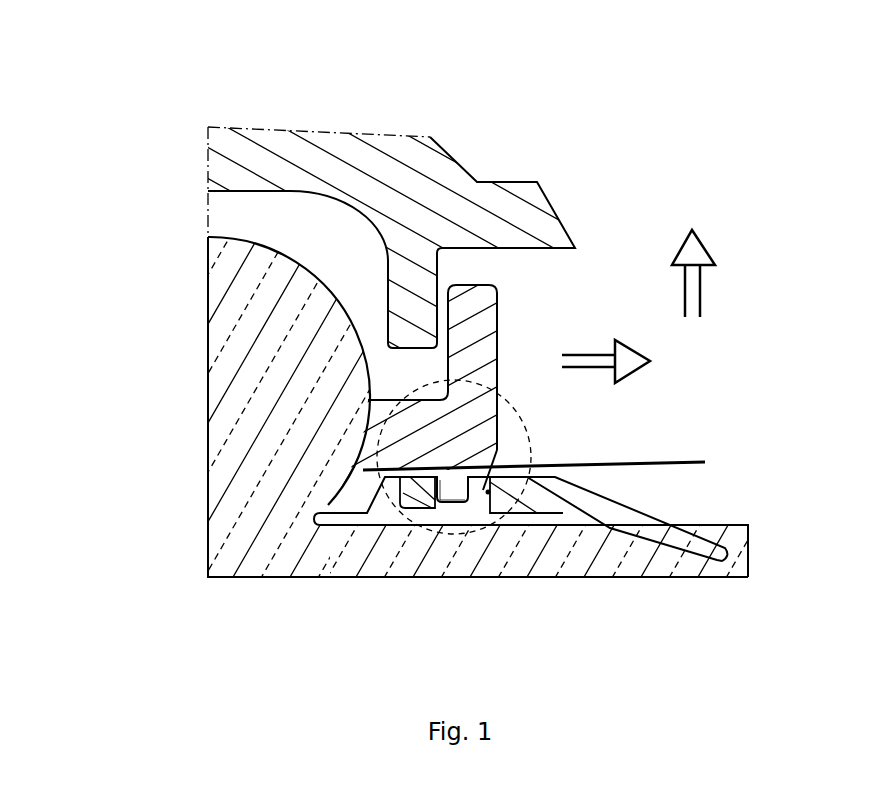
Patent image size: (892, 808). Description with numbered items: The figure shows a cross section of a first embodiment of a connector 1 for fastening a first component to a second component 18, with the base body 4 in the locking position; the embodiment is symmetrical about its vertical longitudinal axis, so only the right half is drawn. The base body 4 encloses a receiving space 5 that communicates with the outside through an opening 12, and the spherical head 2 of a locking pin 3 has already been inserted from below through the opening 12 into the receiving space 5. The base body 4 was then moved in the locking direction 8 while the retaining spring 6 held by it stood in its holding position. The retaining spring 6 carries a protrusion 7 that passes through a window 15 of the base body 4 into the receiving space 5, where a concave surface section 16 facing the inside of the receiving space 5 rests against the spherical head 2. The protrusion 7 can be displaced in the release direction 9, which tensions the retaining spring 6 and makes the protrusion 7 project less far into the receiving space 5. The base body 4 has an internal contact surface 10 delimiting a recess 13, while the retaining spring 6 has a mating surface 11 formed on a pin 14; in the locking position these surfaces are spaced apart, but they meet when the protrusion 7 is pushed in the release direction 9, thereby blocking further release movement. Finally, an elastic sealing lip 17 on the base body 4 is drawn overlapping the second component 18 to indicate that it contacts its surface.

The connector 1 is at (514, 129).
The head 2 is at (227, 312).
The locking pin 3 is at (183, 381).
The base body 4 is at (397, 160).
The receiving space 5 is at (243, 218).
The retaining spring 6 is at (477, 440).
The protrusion 7 is at (546, 460).
The locking direction 8 is at (699, 273).
The release direction 9 is at (606, 346).
The internal contact surface 10 is at (491, 455).
The mating surface 11 is at (478, 488).
The opening 12 is at (252, 512).
The recess 13 is at (443, 500).
The pin 14 is at (458, 488).
The window 15 is at (413, 373).
The concave surface section 16 is at (342, 480).
The sealing lip 17 is at (617, 513).
The second component 18 is at (617, 567).